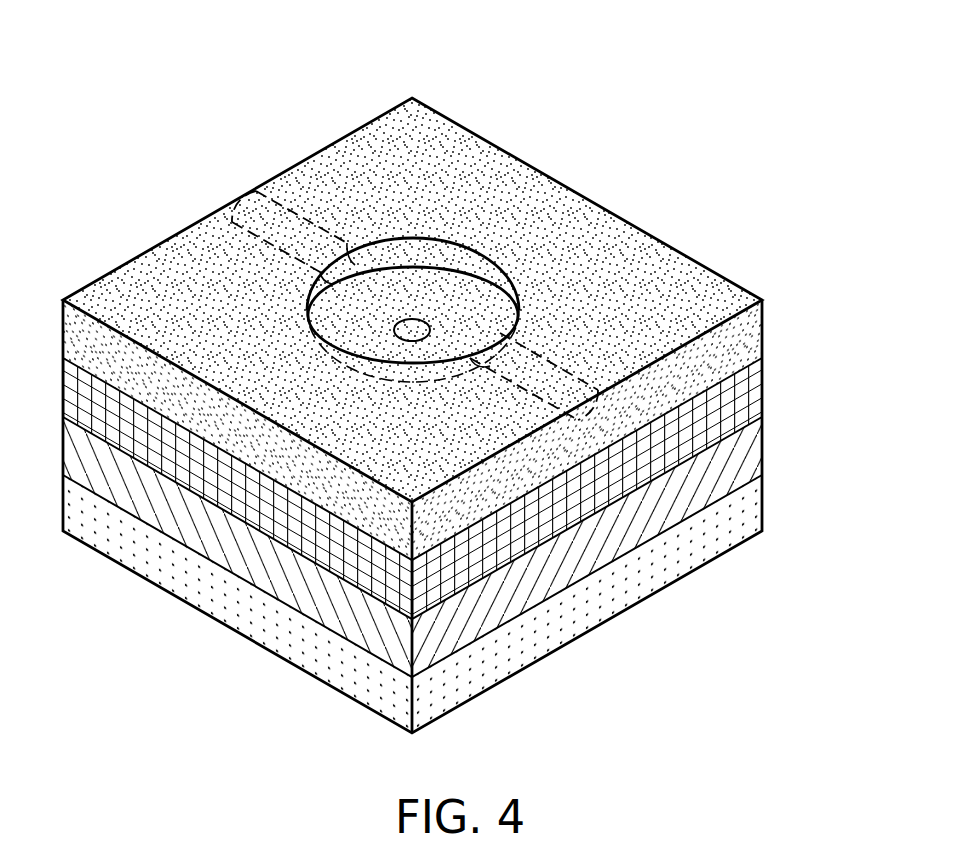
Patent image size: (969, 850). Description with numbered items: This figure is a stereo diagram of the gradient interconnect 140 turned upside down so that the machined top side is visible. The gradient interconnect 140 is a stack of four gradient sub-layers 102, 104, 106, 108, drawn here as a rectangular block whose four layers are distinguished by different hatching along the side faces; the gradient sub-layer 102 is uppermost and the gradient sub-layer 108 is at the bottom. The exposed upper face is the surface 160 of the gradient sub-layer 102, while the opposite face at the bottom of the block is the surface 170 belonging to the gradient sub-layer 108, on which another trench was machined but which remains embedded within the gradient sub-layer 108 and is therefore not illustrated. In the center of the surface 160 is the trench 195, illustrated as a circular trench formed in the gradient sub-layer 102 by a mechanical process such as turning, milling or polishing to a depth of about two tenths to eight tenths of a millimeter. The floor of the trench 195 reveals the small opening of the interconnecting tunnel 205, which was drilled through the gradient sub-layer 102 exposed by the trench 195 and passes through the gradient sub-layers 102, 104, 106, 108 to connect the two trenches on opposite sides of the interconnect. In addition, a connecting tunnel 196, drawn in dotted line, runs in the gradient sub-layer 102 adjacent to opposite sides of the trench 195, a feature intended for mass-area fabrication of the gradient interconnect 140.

The gradient interconnect 140 is at (466, 376).
The surface of the gradient sub-layer 102 160 is at (163, 286).
The surface of the gradient sub-layer 108 170 is at (145, 587).
The gradient sub-layer 102 is at (748, 340).
The gradient sub-layer 104 is at (748, 397).
The gradient sub-layer 106 is at (748, 455).
The gradient sub-layer 108 is at (748, 512).
The trench 195 is at (485, 243).
The connecting tunnel 196 is at (298, 210).
The interconnecting tunnel 205 is at (421, 310).